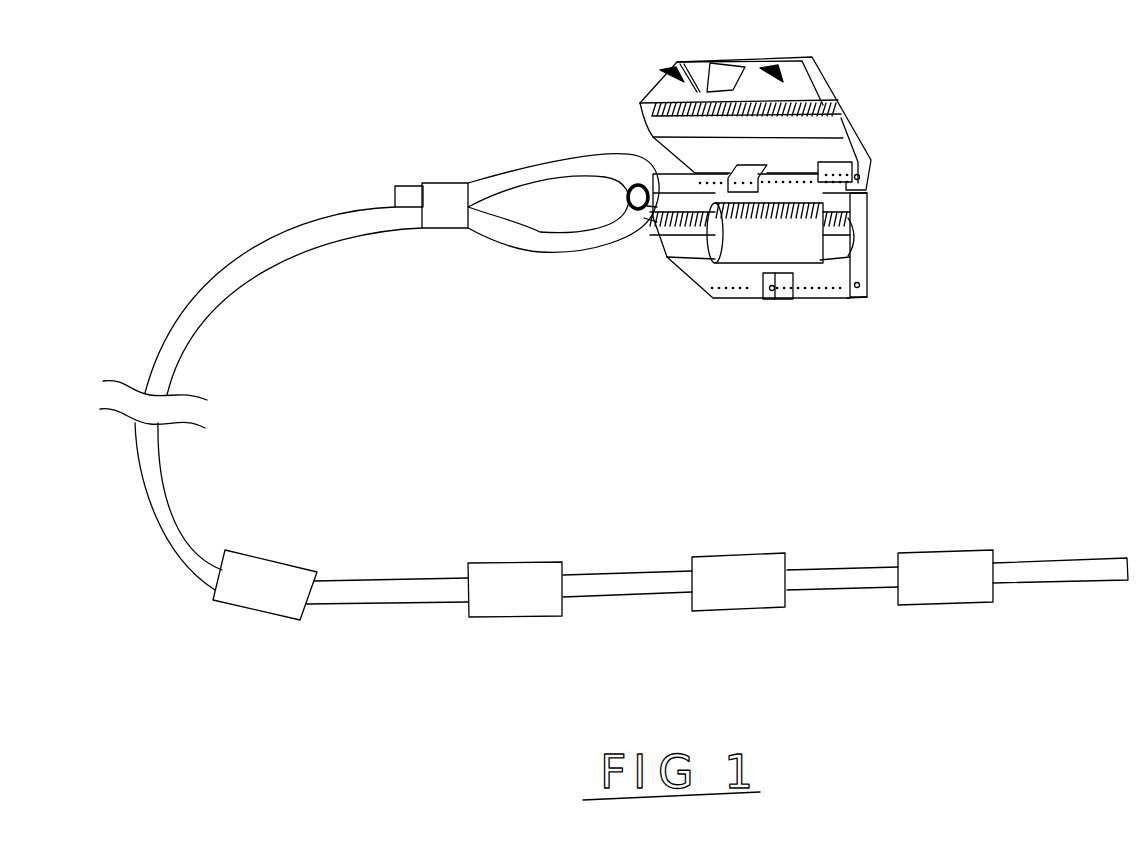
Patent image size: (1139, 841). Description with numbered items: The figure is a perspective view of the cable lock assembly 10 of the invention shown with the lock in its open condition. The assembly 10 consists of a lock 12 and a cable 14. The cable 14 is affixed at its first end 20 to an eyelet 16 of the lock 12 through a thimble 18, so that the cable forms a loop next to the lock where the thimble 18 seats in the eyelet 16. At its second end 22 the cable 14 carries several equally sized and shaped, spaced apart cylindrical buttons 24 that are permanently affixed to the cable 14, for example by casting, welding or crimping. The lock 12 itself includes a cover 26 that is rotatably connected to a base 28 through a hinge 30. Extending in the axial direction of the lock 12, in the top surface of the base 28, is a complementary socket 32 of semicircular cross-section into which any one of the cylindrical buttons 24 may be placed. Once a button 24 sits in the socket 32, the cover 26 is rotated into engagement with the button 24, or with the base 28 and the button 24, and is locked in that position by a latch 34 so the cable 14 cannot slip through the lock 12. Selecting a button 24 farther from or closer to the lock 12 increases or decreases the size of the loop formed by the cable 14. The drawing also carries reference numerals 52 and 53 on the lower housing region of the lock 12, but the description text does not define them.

The cable lock assembly 10 is at (618, 117).
The lock 12 is at (879, 190).
The cable 14 is at (499, 393).
The eyelet 16 is at (632, 238).
The thimble 18 is at (435, 167).
The first end 20 is at (522, 159).
The second end 22 is at (1100, 588).
The cylindrical buttons 24 is at (603, 612).
The cover 26 is at (760, 119).
The base 28 is at (799, 245).
The hinge 30 is at (883, 166).
The socket 32 is at (736, 258).
The latch 34 is at (722, 61).
The housing bottom plate 52 is at (891, 326).
The screw hole 53 is at (769, 322).